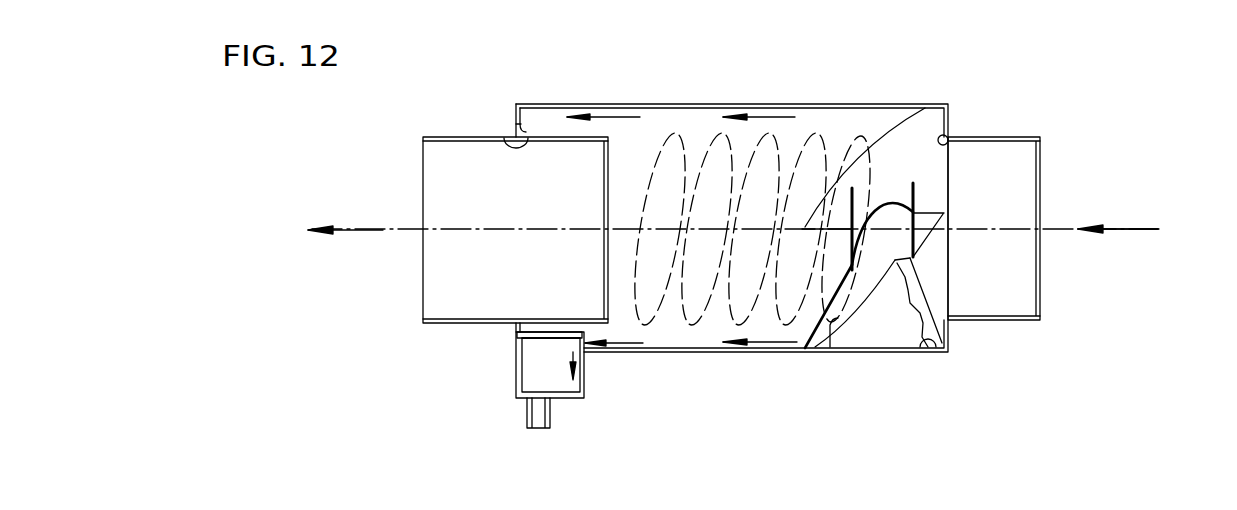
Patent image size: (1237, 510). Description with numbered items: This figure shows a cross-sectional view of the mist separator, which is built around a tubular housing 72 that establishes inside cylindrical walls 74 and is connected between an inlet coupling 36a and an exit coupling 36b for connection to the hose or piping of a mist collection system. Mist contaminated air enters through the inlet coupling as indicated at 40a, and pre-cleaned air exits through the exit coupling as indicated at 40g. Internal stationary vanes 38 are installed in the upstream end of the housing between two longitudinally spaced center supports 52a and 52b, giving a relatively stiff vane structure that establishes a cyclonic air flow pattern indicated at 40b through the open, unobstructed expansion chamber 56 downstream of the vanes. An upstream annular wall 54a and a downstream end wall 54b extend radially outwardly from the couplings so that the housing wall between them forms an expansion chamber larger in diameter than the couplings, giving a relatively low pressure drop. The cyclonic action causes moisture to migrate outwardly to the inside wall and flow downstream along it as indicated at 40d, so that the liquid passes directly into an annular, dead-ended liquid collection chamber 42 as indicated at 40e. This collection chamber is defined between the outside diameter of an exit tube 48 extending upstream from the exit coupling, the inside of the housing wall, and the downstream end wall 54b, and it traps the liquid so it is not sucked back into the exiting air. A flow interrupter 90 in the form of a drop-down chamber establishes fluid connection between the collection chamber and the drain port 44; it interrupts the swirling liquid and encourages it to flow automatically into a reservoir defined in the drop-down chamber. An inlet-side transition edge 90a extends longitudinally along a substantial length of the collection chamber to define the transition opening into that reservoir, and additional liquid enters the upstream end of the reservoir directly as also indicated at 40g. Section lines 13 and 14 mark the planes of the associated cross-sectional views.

The section line 13- 13 is at (802, 410).
The section line 14- 14 is at (560, 330).
The inlet end coupling 36a is at (1040, 137).
The exit end coupling 36b is at (423, 137).
The internal stationary vanes 38 is at (890, 138).
The entering mist contaminated air 40a is at (1125, 228).
The cyclonic air flow pattern 40b is at (830, 347).
The liquid flow along inside wall 40d is at (627, 117).
The liquid flow into collection chamber 40e is at (573, 117).
The exiting pre-cleaned air and liquid entering reservoir 40g is at (352, 230).
The liquid collection chamber 42 is at (516, 124).
The drain port 44 is at (527, 405).
The exit tube 48 is at (572, 332).
The center support 52a is at (913, 185).
The center support 52b is at (852, 180).
The upstream annular wall 54a is at (946, 135).
The downstream end wall 54b is at (511, 135).
The expansion chamber 56 is at (710, 340).
The tubular housing 72 is at (681, 105).
The inside cylindrical walls 74 is at (940, 335).
The flow interrupter 90 is at (523, 370).
The inlet-side transition edge 90a is at (523, 336).